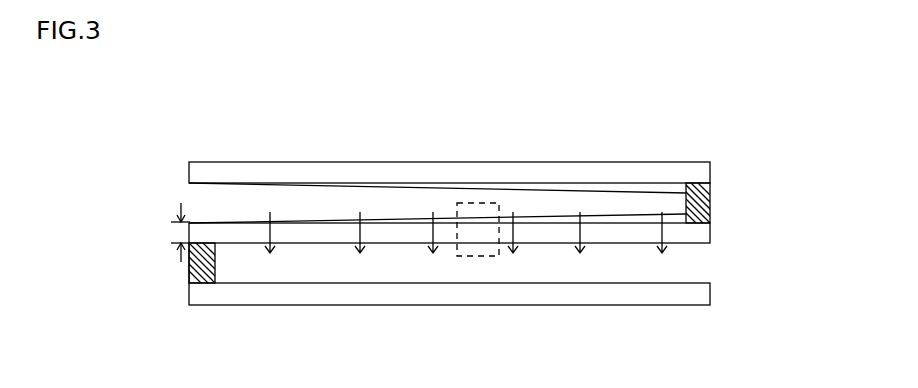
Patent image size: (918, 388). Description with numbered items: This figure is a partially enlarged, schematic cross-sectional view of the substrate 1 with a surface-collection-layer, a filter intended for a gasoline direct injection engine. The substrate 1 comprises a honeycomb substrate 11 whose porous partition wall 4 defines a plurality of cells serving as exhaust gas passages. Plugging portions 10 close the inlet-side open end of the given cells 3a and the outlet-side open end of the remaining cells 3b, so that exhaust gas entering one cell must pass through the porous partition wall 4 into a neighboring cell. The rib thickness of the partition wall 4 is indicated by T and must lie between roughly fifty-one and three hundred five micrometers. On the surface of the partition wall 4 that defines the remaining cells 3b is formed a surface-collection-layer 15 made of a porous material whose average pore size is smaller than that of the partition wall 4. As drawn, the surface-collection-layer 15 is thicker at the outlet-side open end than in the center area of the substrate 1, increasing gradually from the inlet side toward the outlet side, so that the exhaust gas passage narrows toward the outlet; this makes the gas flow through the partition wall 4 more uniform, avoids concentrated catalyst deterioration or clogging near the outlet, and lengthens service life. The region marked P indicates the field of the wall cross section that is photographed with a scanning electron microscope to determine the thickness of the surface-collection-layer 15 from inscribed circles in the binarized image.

The substrate with a surface-collection-layer 1 is at (136, 140).
The given cells 3a is at (296, 268).
The remaining cells 3b is at (338, 197).
The partition wall 4 is at (272, 170).
The plugging portions 10 is at (712, 206).
The honeycomb substrate 11 is at (694, 161).
The surface-collection-layer 15 is at (610, 188).
The field P is at (482, 203).
The thickness of the partition wall T is at (181, 233).